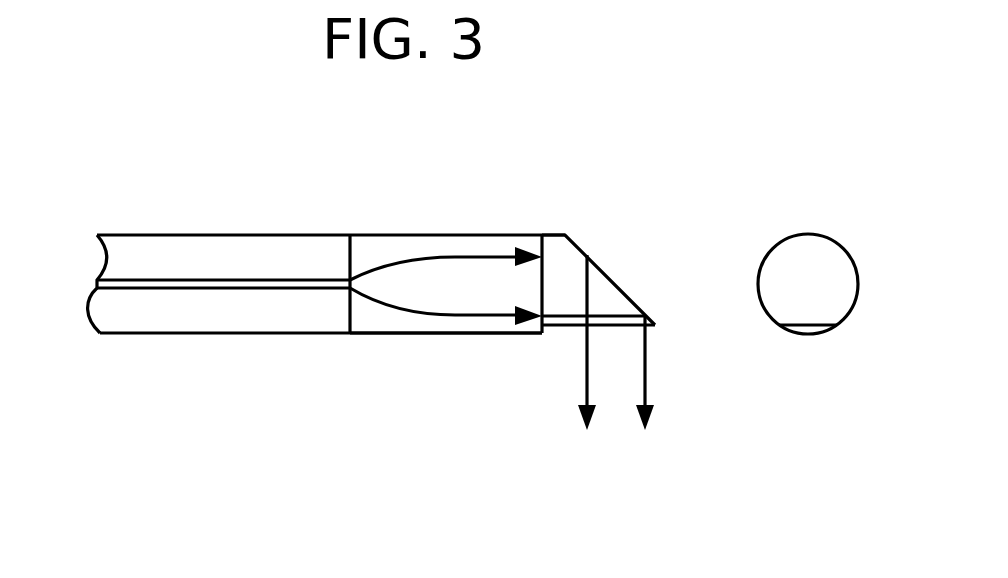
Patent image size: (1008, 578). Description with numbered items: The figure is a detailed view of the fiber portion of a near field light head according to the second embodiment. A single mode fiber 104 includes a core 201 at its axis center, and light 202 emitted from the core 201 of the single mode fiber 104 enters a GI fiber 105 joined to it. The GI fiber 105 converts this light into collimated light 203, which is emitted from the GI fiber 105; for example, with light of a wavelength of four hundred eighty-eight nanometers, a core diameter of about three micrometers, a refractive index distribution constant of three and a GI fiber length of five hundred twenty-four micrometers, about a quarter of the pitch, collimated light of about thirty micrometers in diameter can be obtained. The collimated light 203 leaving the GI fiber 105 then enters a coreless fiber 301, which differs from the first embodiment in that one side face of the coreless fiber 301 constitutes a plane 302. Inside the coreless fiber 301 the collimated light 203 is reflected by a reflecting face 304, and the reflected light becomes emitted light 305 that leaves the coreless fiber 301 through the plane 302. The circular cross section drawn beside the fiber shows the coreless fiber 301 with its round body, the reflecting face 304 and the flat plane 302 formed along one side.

The single mode fiber 104 is at (178, 313).
The GI fiber 105 is at (398, 317).
The core 201 is at (237, 285).
The light 202 is at (467, 312).
The collimated light 203 is at (552, 308).
The coreless fiber 301 is at (597, 290).
The plane 302 is at (561, 322).
The reflecting face 304 is at (627, 295).
The emitted light 305 is at (645, 382).